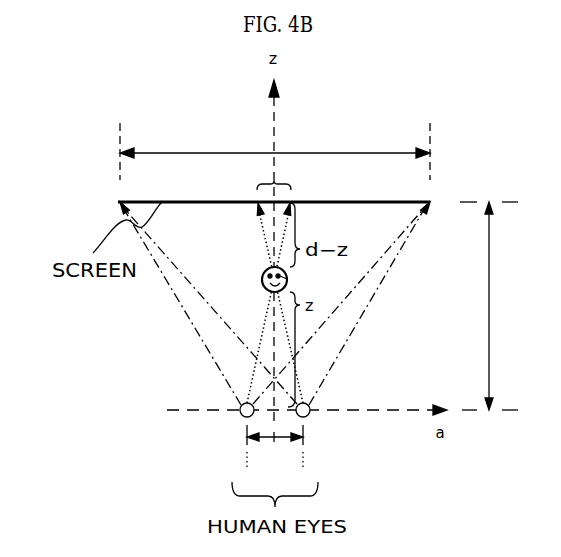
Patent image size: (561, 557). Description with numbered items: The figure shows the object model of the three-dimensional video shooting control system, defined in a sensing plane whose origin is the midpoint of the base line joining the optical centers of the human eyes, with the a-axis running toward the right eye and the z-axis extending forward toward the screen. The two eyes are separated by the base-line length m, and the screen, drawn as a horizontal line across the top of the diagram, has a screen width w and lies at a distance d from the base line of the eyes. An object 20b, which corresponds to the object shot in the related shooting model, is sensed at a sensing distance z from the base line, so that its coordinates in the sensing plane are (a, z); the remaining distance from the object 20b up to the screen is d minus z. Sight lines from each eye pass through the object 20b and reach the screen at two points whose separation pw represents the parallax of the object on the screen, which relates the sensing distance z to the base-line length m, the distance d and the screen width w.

The object 20b is at (263, 290).
The screen width w is at (275, 151).
The pixel width pw is at (279, 178).
The distance from the base line of human eyes to the screen d is at (489, 306).
The base-line length m is at (275, 446).